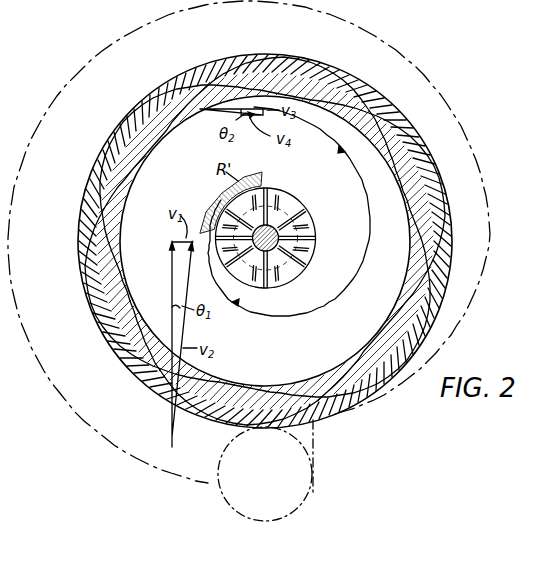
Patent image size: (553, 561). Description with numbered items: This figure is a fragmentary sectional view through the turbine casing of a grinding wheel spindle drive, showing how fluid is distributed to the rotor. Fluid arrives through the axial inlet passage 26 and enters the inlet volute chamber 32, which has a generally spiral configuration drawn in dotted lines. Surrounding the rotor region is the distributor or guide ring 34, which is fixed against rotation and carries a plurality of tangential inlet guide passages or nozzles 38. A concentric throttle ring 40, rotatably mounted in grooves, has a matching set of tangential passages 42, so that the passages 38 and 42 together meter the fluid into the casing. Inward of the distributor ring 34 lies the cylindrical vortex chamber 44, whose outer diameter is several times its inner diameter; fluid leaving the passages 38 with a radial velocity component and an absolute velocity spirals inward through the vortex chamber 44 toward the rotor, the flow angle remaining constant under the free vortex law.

The inlet passage 26 is at (314, 494).
The inlet volute chamber 32 is at (60, 385).
The distributor or guide ring 34 is at (121, 190).
The tangential inlet guide passages or nozzles 38 is at (203, 98).
The throttle ring 40 is at (79, 219).
The tangential passages 42 is at (143, 98).
The vortex chamber 44 is at (289, 211).